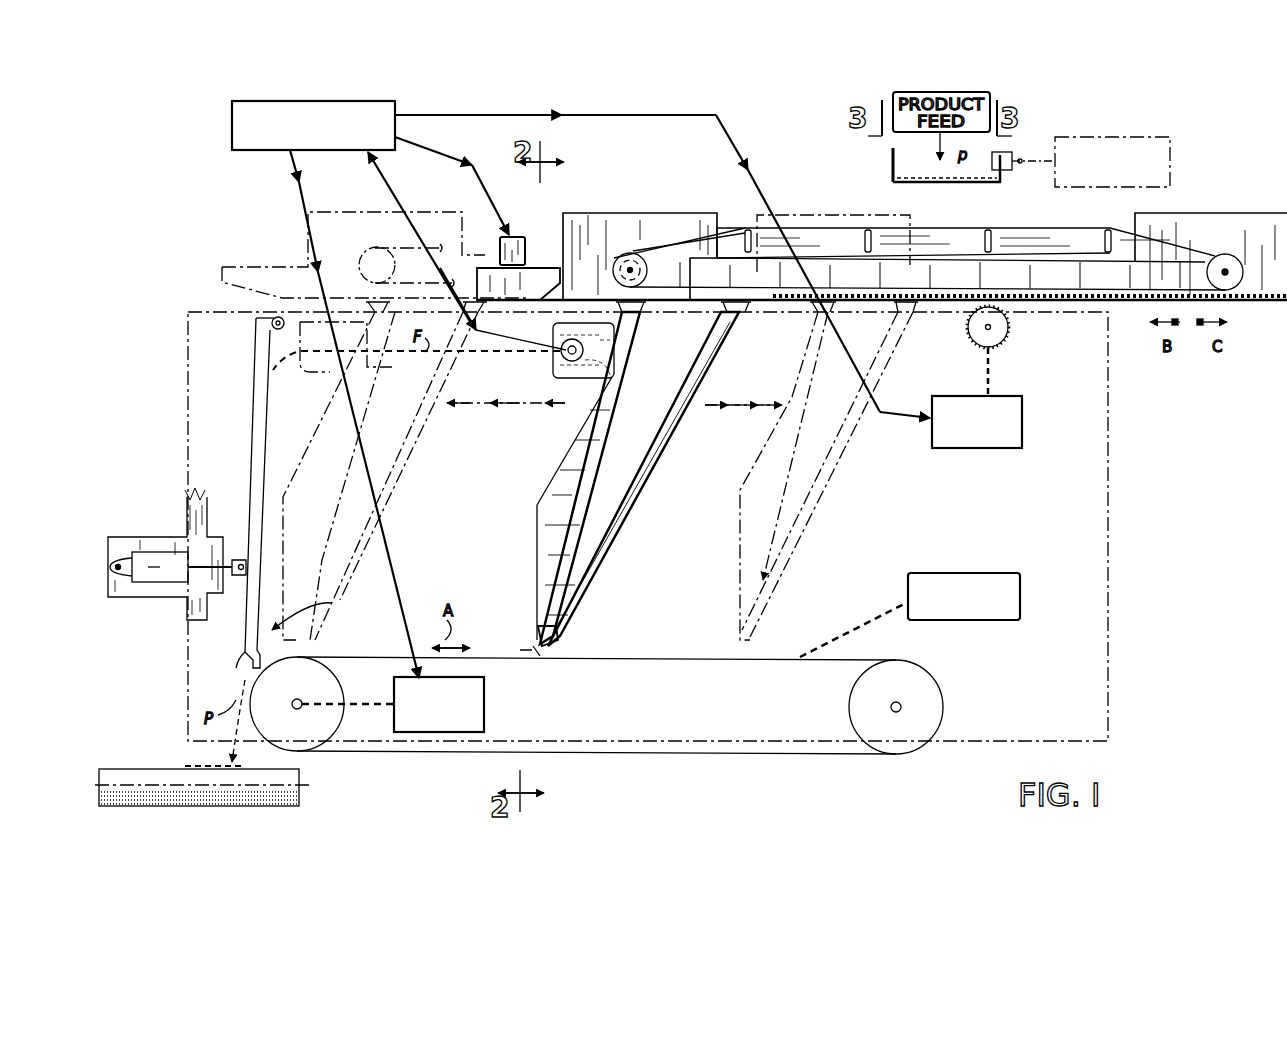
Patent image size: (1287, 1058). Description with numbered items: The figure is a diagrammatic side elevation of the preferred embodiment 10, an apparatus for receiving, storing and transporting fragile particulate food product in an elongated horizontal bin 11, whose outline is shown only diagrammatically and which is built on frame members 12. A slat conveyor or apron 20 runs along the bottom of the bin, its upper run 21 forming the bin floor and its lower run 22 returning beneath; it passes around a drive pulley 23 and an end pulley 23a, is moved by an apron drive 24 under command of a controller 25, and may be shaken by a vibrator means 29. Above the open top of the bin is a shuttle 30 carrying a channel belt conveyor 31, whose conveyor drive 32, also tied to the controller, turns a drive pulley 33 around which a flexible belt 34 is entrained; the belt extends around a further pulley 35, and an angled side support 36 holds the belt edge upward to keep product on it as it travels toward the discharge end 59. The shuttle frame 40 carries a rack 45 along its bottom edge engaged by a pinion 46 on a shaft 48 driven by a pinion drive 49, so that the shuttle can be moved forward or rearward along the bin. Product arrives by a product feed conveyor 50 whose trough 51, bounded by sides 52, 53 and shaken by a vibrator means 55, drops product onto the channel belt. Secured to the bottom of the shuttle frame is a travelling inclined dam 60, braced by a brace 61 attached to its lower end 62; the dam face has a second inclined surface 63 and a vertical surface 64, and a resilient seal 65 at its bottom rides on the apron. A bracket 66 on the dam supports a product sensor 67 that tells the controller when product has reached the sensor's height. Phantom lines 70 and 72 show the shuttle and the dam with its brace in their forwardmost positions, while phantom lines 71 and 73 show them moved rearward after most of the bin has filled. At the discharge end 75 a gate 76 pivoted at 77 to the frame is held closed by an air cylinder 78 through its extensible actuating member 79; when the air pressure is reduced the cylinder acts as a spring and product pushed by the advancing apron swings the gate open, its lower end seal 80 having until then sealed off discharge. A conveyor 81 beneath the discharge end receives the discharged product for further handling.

The preferred embodiment 10 is at (722, 792).
The bin 11 is at (1112, 441).
The frame member 12 is at (198, 494).
The slat conveyor 20 is at (622, 703).
The upper run 21 is at (664, 660).
The lower run 22 is at (642, 758).
The drive pulley 23 is at (332, 690).
The end pulley 23a is at (936, 708).
The apron drive 24 is at (486, 706).
The controller 25 is at (232, 146).
The vibrator means 29 is at (1006, 572).
The shuttle 30 is at (941, 224).
The channel belt conveyor 31 is at (940, 232).
The conveyor drive 32 is at (514, 244).
The drive pulley 33 is at (640, 262).
The flexible belt 34 is at (715, 245).
The pulley 35 is at (1240, 270).
The side support 36 is at (1030, 250).
The shuttle frame 40 is at (616, 222).
The rack 45 is at (1046, 308).
The pinion 46 is at (1005, 350).
The shaft 48 is at (984, 325).
The pinion drive 49 is at (1012, 450).
The product feed conveyor 50 is at (940, 173).
The trough 51 is at (918, 182).
The side 52 is at (890, 155).
The side 53 is at (1002, 172).
The vibrator means 55 is at (1170, 140).
The discharge end 59 is at (613, 255).
The dam 60 is at (618, 410).
The brace 61 is at (707, 384).
The lower end 62 is at (535, 630).
The second inclined surface 63 is at (568, 458).
The vertical surface 64 is at (535, 552).
The resilient seal 65 is at (526, 654).
The bracket 66 is at (565, 372).
The product sensor 67 is at (563, 358).
The phantom lines 70 is at (262, 262).
The phantom lines 71 is at (818, 202).
The phantom lines 72 is at (348, 438).
The phantom lines 73 is at (805, 440).
The discharge end 75 is at (315, 613).
The gate 76 is at (265, 526).
The pivot 77 is at (272, 324).
The air cylinder 78 is at (155, 585).
The extensible actuating member 79 is at (226, 556).
The lower end seal 80 is at (248, 662).
The conveyor 81 is at (162, 768).